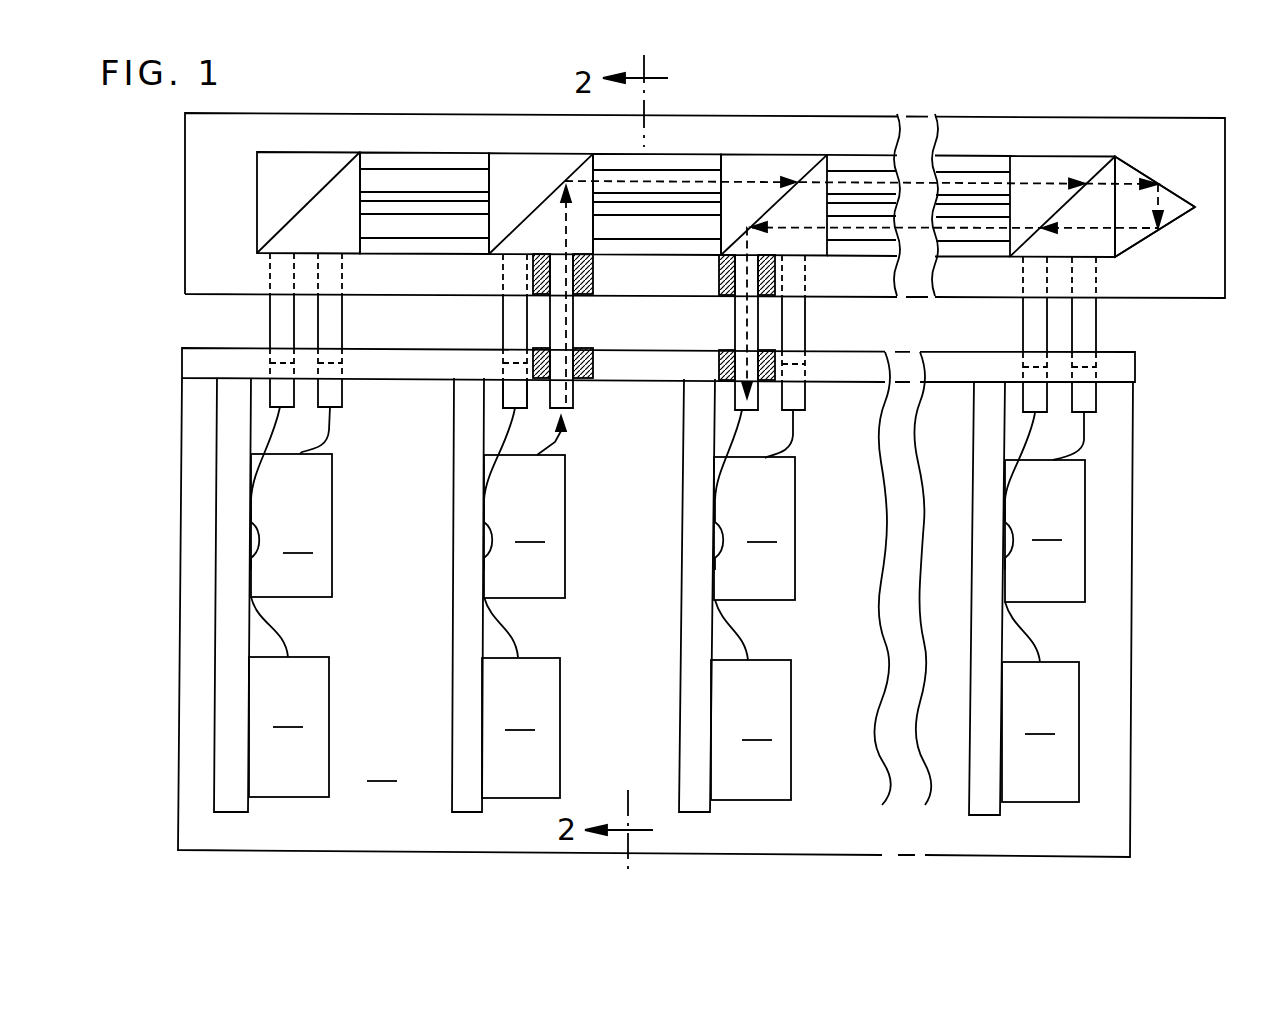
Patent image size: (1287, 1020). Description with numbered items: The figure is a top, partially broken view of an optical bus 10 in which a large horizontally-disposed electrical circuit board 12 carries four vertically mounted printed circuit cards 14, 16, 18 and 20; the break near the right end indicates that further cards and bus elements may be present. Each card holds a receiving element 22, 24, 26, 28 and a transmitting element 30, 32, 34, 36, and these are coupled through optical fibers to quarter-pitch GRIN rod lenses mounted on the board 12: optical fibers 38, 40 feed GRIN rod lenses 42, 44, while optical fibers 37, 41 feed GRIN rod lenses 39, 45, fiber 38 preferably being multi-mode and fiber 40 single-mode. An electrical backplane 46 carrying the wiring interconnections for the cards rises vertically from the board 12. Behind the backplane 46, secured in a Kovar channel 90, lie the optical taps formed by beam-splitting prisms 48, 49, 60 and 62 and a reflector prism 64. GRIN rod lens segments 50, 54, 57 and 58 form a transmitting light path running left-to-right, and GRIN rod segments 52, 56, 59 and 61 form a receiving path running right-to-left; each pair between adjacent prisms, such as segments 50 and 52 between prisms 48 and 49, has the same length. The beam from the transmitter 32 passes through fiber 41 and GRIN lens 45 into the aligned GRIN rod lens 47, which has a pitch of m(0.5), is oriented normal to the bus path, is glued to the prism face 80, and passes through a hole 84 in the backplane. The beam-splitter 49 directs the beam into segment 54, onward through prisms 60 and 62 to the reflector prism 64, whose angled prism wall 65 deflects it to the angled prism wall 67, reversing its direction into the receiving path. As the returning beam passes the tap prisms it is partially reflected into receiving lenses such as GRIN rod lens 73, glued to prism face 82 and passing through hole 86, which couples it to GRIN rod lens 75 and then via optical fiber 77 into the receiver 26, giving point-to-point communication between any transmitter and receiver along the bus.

The optical bus 10 is at (156, 212).
The electrical circuit board 12 is at (655, 604).
The printed circuit card 14 is at (230, 668).
The printed circuit card 16 is at (462, 638).
The printed circuit card 18 is at (700, 637).
The printed circuit card 20 is at (976, 596).
The receiving element 22 is at (289, 727).
The receiving element 24 is at (521, 728).
The receiving element 26 is at (751, 730).
The receiving element 28 is at (1040, 732).
The transmitting element 30 is at (291, 525).
The transmitting element 32 is at (524, 526).
The transmitting element 34 is at (754, 528).
The transmitting element 36 is at (1045, 531).
The optical fiber 37 is at (505, 621).
The optical fiber 38 is at (274, 622).
The GRIN rod lens 39 is at (502, 393).
The optical fiber 40 is at (328, 440).
The optical fiber 41 is at (555, 442).
The GRIN rod lens 42 is at (275, 393).
The GRIN rod lens 44 is at (342, 402).
The GRIN rod lens 45 is at (570, 398).
The electrical backplane 46 is at (205, 347).
The GRIN rod lens 47 is at (571, 313).
The beam-splitting prism 48 is at (320, 163).
The beam-splitter 49 is at (490, 163).
The GRIN rod lens segment 50 is at (405, 165).
The GRIN rod lens segment 52 is at (410, 238).
The GRIN rod lens segment 54 is at (696, 172).
The GRIN rod lens segment 56 is at (665, 232).
The GRIN rod lens segment 57 is at (878, 170).
The GRIN rod lens segment 58 is at (967, 172).
The GRIN rod lens segment 59 is at (864, 238).
The beam-splitting prism 60 is at (775, 165).
The GRIN rod lens segment 61 is at (957, 238).
The beam-splitting prism 62 is at (1083, 162).
The reflector prism 64 is at (1137, 213).
The angled prism wall 65 is at (1177, 190).
The angled prism wall 67 is at (1170, 217).
The GRIN rod lens 73 is at (738, 318).
The GRIN rod lens 75 is at (732, 402).
The optical fiber 77 is at (733, 440).
The prism face 80 is at (502, 256).
The prism face 82 is at (817, 260).
The hole 84 is at (543, 348).
The hole 86 is at (728, 348).
The channel 90 is at (248, 137).